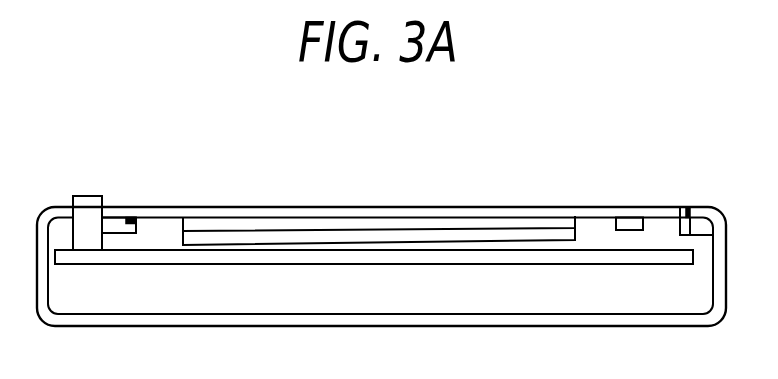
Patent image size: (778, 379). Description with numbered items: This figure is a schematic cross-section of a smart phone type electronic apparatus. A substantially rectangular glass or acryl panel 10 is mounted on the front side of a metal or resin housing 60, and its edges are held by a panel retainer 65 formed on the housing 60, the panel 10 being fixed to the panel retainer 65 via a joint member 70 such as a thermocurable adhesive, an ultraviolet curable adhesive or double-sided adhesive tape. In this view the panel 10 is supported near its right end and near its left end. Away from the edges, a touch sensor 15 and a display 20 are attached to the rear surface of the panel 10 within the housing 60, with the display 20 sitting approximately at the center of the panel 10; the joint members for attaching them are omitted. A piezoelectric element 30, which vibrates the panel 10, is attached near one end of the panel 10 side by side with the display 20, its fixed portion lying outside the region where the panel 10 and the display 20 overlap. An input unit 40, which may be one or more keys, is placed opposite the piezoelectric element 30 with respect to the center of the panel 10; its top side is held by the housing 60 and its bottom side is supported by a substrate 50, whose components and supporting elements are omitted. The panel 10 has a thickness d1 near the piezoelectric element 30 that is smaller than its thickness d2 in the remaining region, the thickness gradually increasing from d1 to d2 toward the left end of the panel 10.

The panel 10 is at (298, 210).
The touch sensor 15 is at (363, 225).
The display 20 is at (425, 238).
The piezoelectric element 30 is at (616, 213).
The input unit 40 is at (87, 196).
The substrate 50 is at (312, 256).
The housing 60 is at (413, 320).
The panel retainer 65 is at (110, 208).
The joint member 70 is at (132, 208).
The thickness of the panel near the piezoelectric element d1 is at (658, 232).
The thickness of the panel in the remaining region d2 is at (157, 232).